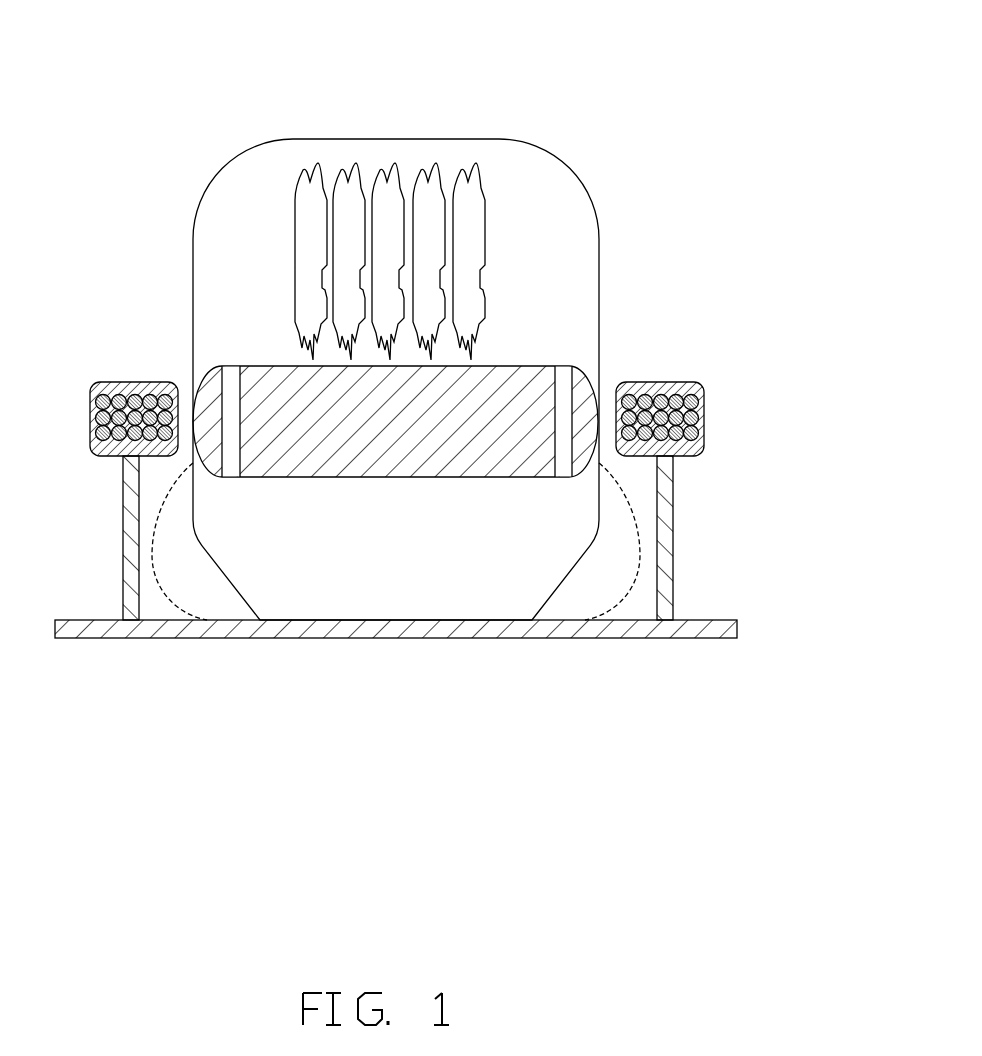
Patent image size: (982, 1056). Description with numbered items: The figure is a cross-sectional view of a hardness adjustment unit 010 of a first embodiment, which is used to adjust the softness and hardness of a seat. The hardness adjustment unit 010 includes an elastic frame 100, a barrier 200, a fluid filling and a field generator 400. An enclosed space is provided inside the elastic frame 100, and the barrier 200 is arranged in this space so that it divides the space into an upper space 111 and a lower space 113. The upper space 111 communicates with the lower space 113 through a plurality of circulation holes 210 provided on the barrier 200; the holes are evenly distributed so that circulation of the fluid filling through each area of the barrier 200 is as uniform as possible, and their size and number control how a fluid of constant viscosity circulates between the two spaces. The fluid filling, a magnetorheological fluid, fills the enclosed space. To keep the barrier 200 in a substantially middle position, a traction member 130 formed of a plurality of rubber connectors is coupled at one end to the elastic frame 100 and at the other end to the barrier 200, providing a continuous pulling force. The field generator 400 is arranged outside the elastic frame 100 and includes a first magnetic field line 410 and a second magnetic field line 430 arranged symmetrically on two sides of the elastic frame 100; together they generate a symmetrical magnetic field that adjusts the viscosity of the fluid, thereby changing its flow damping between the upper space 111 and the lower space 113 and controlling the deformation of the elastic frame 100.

The hardness adjustment unit 010 is at (355, 37).
The elastic frame 100 is at (452, 353).
The upper space 111 is at (587, 248).
The lower space 113 is at (625, 555).
The traction member 130 is at (472, 217).
The barrier 200 is at (408, 387).
The circulation holes 210 is at (231, 379).
The field generator 400 is at (436, 473).
The first magnetic field line 410 is at (132, 397).
The second magnetic field line 430 is at (690, 385).